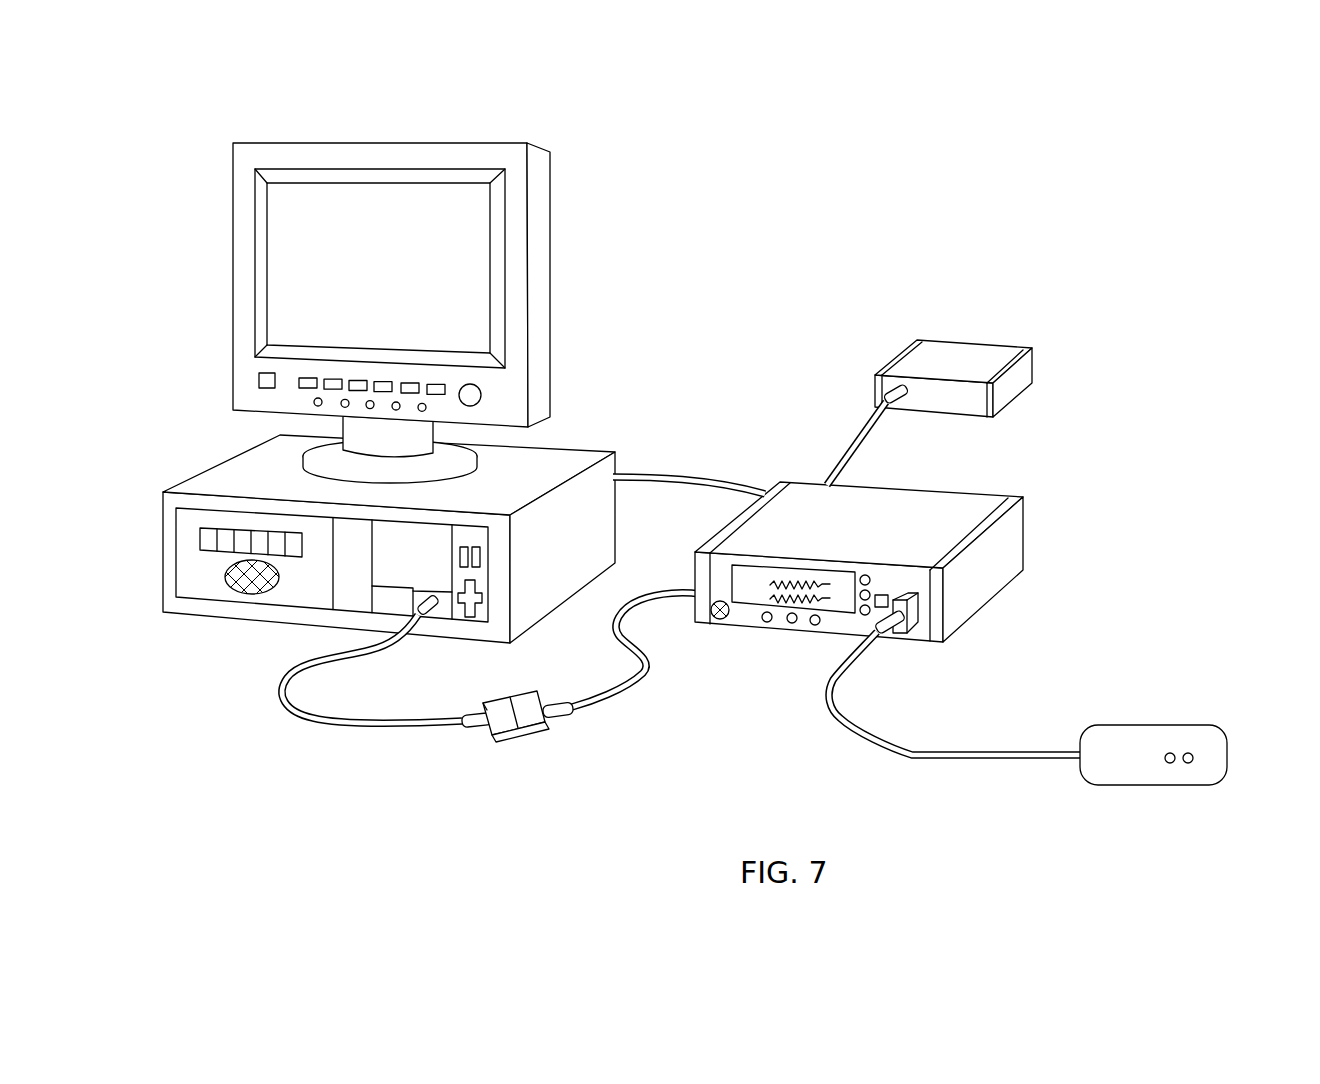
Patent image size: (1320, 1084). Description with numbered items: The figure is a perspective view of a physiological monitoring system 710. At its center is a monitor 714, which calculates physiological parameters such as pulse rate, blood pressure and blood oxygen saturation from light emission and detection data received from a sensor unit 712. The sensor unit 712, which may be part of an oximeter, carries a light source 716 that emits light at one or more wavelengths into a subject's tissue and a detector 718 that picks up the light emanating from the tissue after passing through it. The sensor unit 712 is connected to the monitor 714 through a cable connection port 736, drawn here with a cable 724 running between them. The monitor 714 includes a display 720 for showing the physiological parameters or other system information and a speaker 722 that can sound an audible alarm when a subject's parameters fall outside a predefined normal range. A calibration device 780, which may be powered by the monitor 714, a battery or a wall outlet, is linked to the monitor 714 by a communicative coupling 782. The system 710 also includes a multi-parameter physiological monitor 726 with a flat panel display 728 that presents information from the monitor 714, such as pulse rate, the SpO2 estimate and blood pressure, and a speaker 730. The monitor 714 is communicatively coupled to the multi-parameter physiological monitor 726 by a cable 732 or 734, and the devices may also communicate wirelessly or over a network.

The physiological monitoring system 710 is at (1096, 190).
The sensor unit 712 is at (1182, 743).
The monitor 714 is at (845, 572).
The light source 716 is at (1172, 765).
The detector 718 is at (1193, 763).
The display 720 is at (755, 600).
The speaker 722 is at (717, 627).
The cable 724 is at (847, 728).
The multi-parameter physiological monitor 726 is at (404, 285).
The display 728 is at (285, 288).
The speaker 730 is at (257, 597).
The cable 732 is at (605, 698).
The cable 734 is at (665, 475).
The cable connection port 736 is at (907, 635).
The calibration device 780 is at (982, 342).
The communicative coupling 782 is at (855, 443).